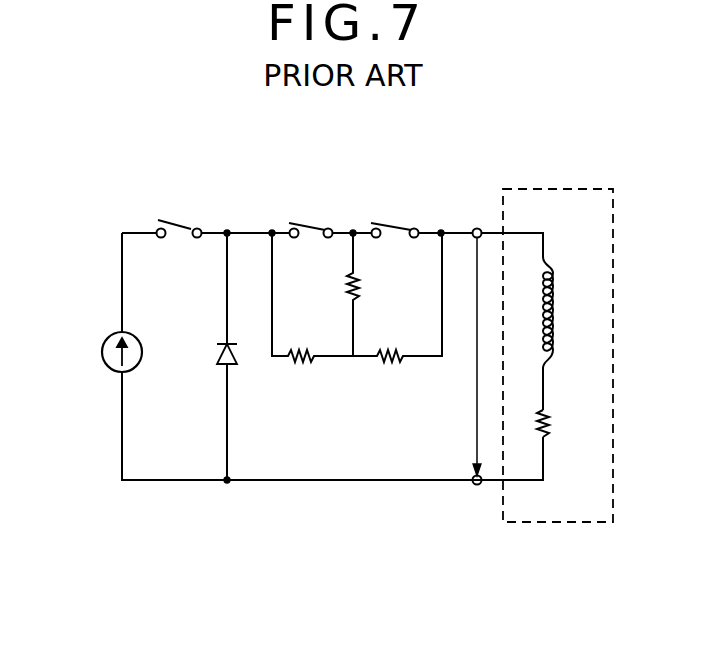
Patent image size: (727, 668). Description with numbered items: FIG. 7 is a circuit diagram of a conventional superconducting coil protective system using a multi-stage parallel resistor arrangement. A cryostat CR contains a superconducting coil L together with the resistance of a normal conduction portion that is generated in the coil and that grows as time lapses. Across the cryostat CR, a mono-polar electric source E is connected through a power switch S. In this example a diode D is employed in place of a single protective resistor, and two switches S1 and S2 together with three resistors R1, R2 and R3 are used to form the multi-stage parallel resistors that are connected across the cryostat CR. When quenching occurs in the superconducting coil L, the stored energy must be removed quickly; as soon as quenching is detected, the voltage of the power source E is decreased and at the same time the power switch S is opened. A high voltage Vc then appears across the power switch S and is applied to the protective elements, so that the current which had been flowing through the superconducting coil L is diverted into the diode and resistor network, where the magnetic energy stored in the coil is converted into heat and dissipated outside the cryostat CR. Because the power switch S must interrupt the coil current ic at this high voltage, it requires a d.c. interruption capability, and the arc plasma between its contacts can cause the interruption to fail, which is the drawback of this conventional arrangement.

The mono-polar electric source E is at (101, 355).
The power switch S is at (192, 209).
The switch S1 is at (311, 210).
The switch S2 is at (395, 210).
The diode D is at (216, 356).
The resistor R1 is at (312, 317).
The resistor R2 is at (397, 317).
The resistor R3 is at (374, 294).
The superconducting coil L is at (559, 333).
The cryostat CR is at (543, 188).
The high voltage Vc is at (456, 357).
The current ic is at (303, 461).